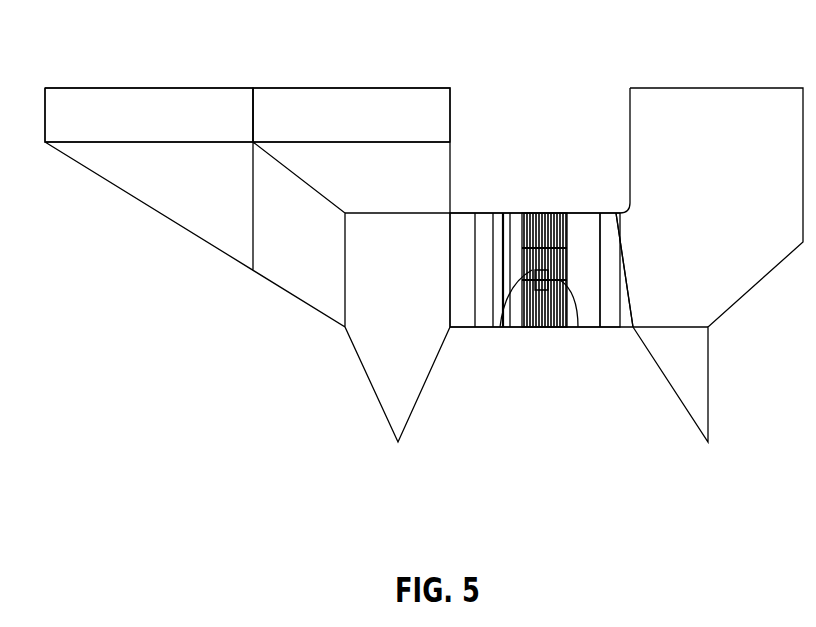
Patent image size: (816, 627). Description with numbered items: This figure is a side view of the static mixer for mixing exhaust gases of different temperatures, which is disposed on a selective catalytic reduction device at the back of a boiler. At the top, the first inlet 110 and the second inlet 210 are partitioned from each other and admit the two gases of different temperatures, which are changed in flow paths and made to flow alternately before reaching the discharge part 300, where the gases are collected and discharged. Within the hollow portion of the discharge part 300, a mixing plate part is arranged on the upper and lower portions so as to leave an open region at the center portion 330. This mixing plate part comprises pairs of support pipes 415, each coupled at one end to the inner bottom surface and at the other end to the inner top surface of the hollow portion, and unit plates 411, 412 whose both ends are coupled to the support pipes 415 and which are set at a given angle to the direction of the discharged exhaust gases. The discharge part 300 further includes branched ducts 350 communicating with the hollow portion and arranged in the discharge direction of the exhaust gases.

The first inlet 110 is at (158, 88).
The second inlet 210 is at (357, 88).
The discharge part 300 is at (481, 183).
The center portion 330 is at (505, 300).
The branched duct 350 is at (582, 213).
The unit plate 411 is at (540, 295).
The unit plate 412 is at (538, 213).
The support pipe 415 is at (568, 285).